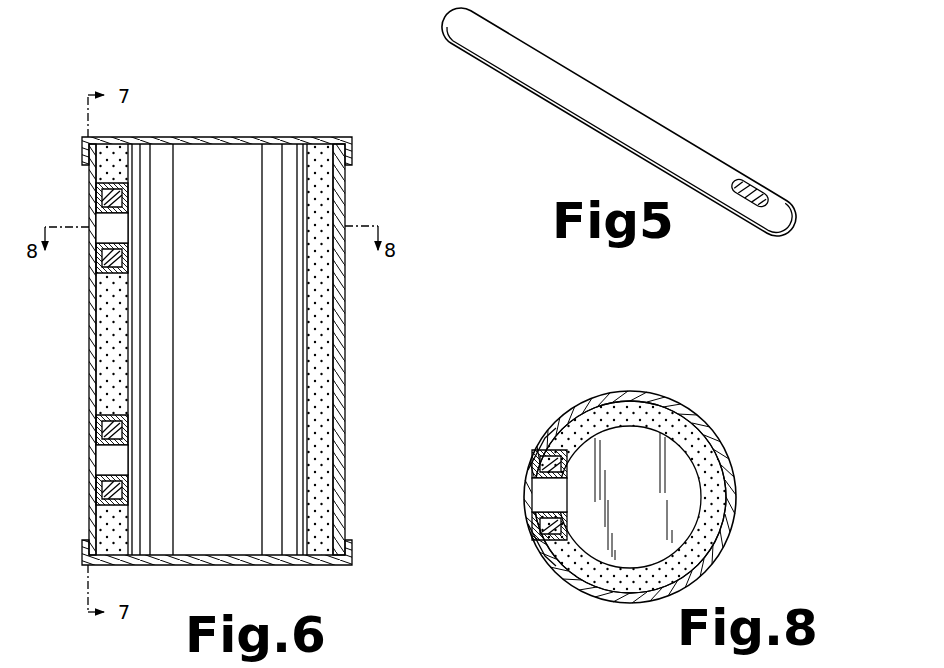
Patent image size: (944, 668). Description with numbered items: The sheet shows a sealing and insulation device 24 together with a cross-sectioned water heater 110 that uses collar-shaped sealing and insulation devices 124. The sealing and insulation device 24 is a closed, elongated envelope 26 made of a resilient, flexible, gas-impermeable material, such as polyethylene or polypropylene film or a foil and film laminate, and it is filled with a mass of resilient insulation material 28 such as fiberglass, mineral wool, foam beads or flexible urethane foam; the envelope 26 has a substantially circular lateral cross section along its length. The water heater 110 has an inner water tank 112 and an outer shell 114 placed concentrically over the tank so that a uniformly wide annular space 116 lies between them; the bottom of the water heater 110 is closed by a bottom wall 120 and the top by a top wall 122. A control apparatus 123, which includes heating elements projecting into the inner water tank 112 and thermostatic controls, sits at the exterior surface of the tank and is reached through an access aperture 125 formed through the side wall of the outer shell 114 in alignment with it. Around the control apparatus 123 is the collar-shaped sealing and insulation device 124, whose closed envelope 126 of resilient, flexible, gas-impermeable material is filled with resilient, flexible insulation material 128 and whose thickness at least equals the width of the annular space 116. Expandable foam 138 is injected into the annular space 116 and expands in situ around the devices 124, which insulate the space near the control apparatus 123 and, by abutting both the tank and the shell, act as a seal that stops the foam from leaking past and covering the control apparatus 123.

In FIG. 5, the sealing and insulation device 24 is at (619, 122).
In FIG. 5, the envelope 26 is at (681, 142).
In FIG. 5, the insulation material 28 is at (751, 185).
In FIG. 6, the water heater 110 is at (220, 325).
In FIG. 6, the inner water tank 112 is at (292, 308).
In FIG. 8, the inner water tank 112 is at (699, 484).
In FIG. 6, the outer shell 114 is at (342, 377).
In FIG. 8, the outer shell 114 is at (735, 510).
In FIG. 6, the annular space 116 is at (258, 349).
In FIG. 8, the annular space 116 is at (653, 495).
In FIG. 6, the bottom wall 120 is at (259, 565).
In FIG. 6, the top wall 122 is at (251, 137).
In FIG. 6, the control apparatus 123 is at (104, 351).
In FIG. 8, the control apparatus 123 is at (562, 460).
In FIG. 6, the sealing and insulation device 124 is at (132, 190).
In FIG. 8, the sealing and insulation device 124 is at (576, 462).
In FIG. 6, the access aperture 125 is at (90, 222).
In FIG. 8, the access aperture 125 is at (528, 488).
In FIG. 8, the envelope 126 is at (560, 430).
In FIG. 8, the insulation material 128 is at (538, 538).
In FIG. 6, the expandable foam 138 is at (327, 208).
In FIG. 8, the expandable foam 138 is at (699, 437).